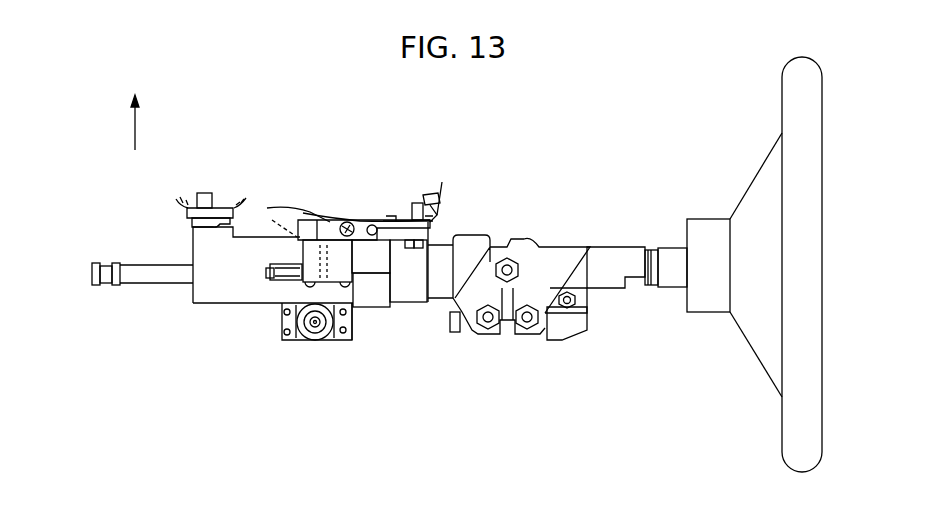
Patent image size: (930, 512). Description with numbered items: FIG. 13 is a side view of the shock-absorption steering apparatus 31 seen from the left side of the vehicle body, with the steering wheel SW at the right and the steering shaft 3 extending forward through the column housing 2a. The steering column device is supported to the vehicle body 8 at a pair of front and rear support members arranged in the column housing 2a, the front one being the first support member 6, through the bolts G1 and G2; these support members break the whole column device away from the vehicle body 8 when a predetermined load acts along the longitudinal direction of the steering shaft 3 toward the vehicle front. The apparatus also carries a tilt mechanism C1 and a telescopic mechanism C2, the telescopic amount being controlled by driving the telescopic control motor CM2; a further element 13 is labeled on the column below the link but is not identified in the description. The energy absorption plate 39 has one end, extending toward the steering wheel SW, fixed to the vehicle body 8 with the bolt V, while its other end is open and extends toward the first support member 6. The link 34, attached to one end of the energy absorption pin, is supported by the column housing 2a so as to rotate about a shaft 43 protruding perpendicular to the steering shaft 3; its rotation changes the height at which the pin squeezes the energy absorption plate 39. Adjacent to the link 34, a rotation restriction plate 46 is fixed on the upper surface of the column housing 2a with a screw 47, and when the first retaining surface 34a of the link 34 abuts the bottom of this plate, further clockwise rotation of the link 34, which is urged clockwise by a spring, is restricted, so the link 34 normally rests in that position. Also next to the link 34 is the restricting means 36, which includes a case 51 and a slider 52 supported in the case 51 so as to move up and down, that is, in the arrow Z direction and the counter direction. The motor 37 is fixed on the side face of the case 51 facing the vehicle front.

The column housing 2a is at (416, 303).
The steering shaft 3 is at (154, 282).
The first support member 6 is at (191, 212).
The vehicle body 8 is at (238, 197).
The gear housing 13 is at (378, 300).
The shock-absorption steering apparatus 31 is at (617, 137).
The link 34 is at (370, 245).
The first retaining surface 34a is at (340, 220).
The restricting means 36 is at (290, 288).
The motor 37 is at (268, 276).
The energy absorption plate 39 is at (437, 211).
The shaft 43 is at (351, 222).
The rotation restriction plate 46 is at (315, 220).
The screw 47 is at (324, 222).
The case 51 is at (303, 262).
The slider 52 is at (285, 226).
The tilt mechanism C1 is at (522, 328).
The telescopic mechanism C2 is at (354, 325).
The telescopic control motor CM2 is at (317, 343).
The bolt G1 is at (208, 193).
The bolt G2 is at (417, 203).
The steering wheel SW is at (812, 100).
The bolt V is at (445, 205).
The arrow Z direction Z is at (133, 112).